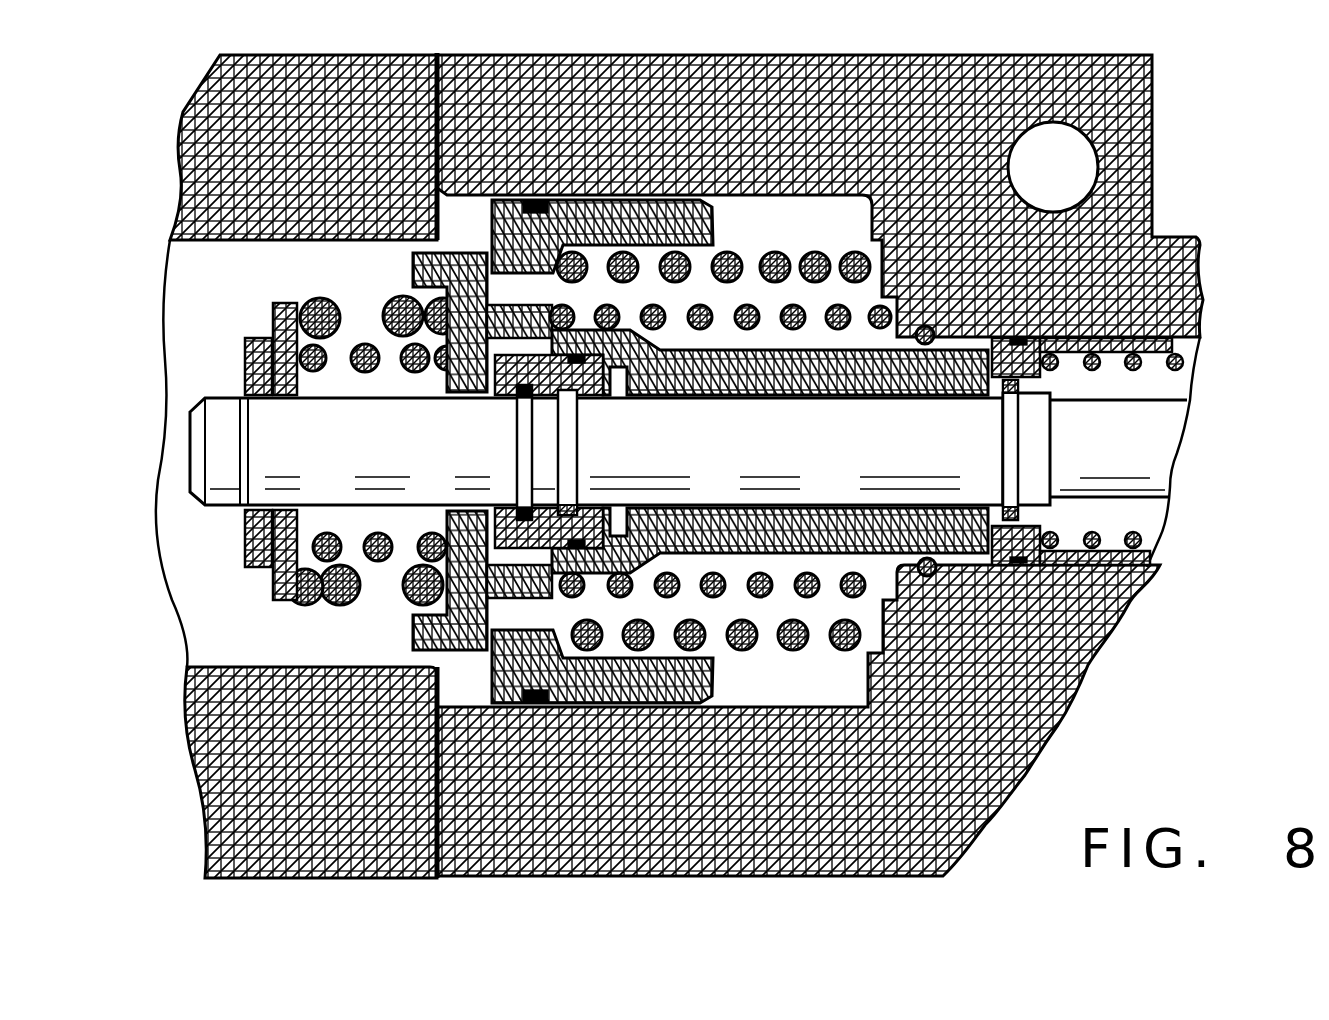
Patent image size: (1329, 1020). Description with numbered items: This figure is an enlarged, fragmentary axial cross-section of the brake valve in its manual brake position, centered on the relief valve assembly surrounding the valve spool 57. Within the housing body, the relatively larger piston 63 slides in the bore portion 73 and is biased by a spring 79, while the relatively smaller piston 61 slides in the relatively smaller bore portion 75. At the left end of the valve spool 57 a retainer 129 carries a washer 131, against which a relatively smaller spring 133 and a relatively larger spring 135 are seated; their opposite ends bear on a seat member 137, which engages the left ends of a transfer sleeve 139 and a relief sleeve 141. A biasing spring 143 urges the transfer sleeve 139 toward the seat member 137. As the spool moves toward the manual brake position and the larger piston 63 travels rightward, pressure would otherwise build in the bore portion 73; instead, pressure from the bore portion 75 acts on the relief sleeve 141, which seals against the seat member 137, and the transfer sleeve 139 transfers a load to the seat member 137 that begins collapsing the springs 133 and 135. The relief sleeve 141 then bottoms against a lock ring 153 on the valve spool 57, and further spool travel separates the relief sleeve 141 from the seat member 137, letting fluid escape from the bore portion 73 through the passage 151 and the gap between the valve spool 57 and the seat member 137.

The valve spool 57 is at (203, 440).
The relatively smaller piston 61 is at (1068, 575).
The relatively larger piston 63 is at (628, 213).
The bore portion 73 is at (770, 206).
The relatively smaller bore portion 75 is at (1167, 378).
The spring 79 is at (813, 636).
The retainer 129 is at (270, 338).
The washer 131 is at (281, 300).
The relatively smaller spring 133 is at (323, 362).
The relatively larger spring 135 is at (333, 607).
The seat member 137 is at (413, 270).
The transfer sleeve 139 is at (805, 375).
The relief sleeve 141 is at (593, 380).
The biasing spring 143 is at (845, 312).
The passage 151 is at (526, 604).
The lock ring 153 is at (517, 405).